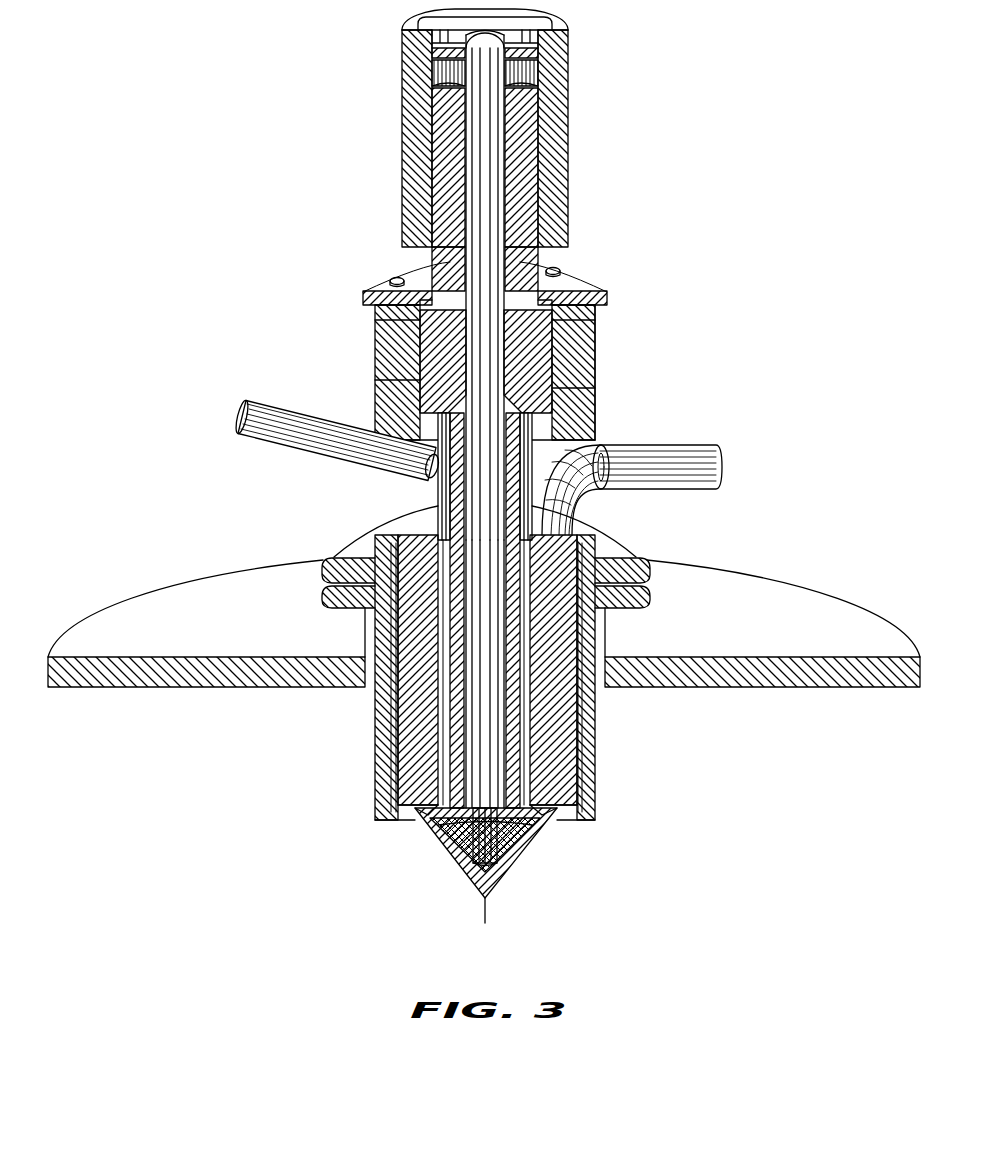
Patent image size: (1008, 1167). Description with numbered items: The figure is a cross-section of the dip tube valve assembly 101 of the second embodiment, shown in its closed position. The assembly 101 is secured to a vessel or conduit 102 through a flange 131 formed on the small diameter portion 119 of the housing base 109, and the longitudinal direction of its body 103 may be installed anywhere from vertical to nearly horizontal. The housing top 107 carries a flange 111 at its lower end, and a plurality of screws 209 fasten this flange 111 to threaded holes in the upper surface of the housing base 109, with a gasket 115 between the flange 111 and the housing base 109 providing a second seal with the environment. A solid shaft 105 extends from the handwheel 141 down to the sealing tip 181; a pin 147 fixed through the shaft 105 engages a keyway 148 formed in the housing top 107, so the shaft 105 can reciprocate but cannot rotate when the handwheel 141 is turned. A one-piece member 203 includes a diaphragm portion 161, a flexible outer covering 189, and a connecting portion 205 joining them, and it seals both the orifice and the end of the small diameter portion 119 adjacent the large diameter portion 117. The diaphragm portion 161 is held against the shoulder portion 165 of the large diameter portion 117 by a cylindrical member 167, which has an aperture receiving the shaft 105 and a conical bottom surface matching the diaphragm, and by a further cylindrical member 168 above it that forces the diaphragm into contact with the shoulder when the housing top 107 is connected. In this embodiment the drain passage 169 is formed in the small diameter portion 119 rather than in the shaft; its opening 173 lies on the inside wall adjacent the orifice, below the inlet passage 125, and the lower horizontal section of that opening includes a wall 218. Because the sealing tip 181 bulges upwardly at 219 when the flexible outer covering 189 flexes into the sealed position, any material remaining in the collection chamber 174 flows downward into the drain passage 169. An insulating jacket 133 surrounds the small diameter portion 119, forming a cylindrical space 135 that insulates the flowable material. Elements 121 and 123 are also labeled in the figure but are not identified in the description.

The dip tube valve assembly 101 is at (212, 148).
The vessel or conduit 102 is at (800, 595).
The body 103 is at (595, 360).
The shaft 105 is at (497, 217).
The housing top 107 is at (540, 250).
The housing base 109 is at (375, 797).
The flange 111 is at (578, 277).
The gasket 115 is at (408, 310).
The large diameter portion 117 is at (595, 333).
The small diameter portion 119 is at (567, 777).
The body upper portion 121 is at (595, 317).
The body lower edge 123 is at (560, 432).
The inlet passage 125 is at (347, 462).
The flange 131 is at (375, 543).
The insulating jacket 133 is at (380, 720).
The space 135 is at (573, 730).
The handwheel 141 is at (560, 108).
The pin 147 is at (470, 205).
The keyway 148 is at (540, 86).
The diaphragm portion 161 is at (545, 397).
The shoulder portion 165 is at (430, 424).
The cylindrical member 167 is at (430, 385).
The cylindrical member 168 is at (410, 292).
The drain passage 169 is at (590, 496).
The opening 173 is at (557, 817).
The collection chamber 174 is at (448, 753).
The sealing tip 181 is at (513, 878).
The flexible outer covering 189 is at (463, 870).
The one-piece member 203 is at (587, 446).
The connecting portion 205 is at (507, 710).
The screw 209 is at (390, 281).
The wall 218 is at (542, 801).
The upward bulge 219 is at (422, 813).